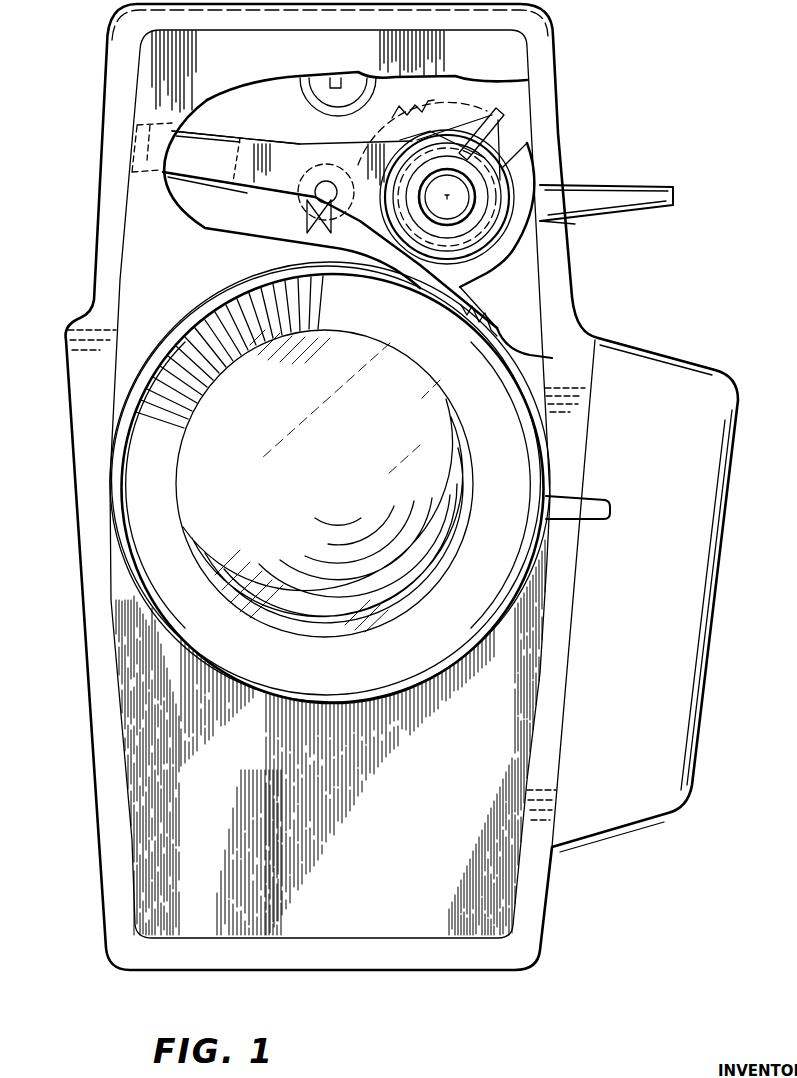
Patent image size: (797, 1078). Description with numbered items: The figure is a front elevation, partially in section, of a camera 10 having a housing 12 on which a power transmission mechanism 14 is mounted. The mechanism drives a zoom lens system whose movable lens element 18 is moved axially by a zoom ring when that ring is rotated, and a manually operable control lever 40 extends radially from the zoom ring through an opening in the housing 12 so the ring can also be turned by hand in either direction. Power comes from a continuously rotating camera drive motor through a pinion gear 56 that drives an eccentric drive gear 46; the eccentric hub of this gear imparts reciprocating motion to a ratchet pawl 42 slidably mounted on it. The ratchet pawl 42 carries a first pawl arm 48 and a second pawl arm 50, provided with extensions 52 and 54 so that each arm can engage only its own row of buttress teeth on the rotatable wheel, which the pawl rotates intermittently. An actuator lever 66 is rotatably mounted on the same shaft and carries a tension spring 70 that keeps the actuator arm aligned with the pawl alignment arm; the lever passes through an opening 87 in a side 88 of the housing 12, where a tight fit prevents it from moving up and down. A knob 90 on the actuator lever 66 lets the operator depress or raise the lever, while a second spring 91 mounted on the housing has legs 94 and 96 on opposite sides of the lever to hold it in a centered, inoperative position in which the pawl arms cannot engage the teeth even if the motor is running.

The camera 10 is at (87, 808).
The housing 12 is at (123, 854).
The power transmission mechanism 14 is at (484, 231).
The movable lens element 18 is at (205, 437).
The manually operable control lever 40 is at (592, 507).
The ratchet pawl 42 is at (460, 282).
The eccentric drive gear 46 is at (432, 112).
The first pawl arm 48 is at (479, 308).
The second pawl arm 50 is at (299, 203).
The extension of first pawl arm 52 is at (497, 328).
The extension of second pawl arm 54 is at (318, 220).
The pinion gear 56 is at (323, 143).
The actuator lever 66 is at (252, 158).
The tension spring 70 is at (527, 143).
The opening 87 is at (577, 222).
The side of housing 88 is at (578, 300).
The knob 90 is at (640, 197).
The second spring 91 is at (147, 176).
The leg of second spring 94 is at (194, 130).
The leg of second spring 96 is at (194, 187).